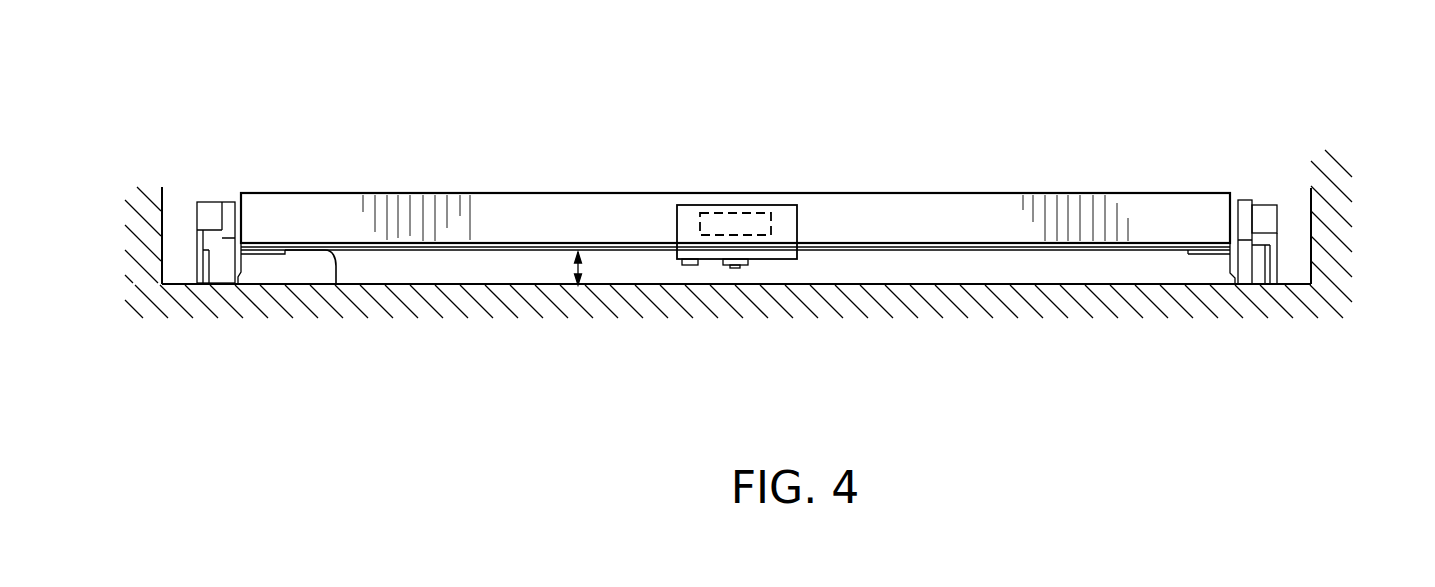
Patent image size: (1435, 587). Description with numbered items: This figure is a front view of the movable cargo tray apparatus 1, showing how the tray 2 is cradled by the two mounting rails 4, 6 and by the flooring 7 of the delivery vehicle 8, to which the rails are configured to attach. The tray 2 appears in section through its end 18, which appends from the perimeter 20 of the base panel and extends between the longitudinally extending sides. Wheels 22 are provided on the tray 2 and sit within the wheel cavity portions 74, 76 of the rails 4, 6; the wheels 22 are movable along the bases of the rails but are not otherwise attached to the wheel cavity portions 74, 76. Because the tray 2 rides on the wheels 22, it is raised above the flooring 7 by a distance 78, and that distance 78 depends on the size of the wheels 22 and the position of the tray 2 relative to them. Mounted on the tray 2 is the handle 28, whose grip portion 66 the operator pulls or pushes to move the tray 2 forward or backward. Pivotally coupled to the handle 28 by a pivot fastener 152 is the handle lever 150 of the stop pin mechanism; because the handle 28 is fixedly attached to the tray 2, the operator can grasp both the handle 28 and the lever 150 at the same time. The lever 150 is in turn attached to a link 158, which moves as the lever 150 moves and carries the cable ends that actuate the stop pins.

The movable cargo tray apparatus 1 is at (1102, 125).
The tray 2 is at (912, 185).
The mounting rail 4 is at (188, 222).
The mounting rail 6 is at (1278, 234).
The flooring 7 is at (880, 285).
The delivery vehicle 8 is at (1365, 257).
The end 18 is at (995, 218).
The perimeter 20 is at (988, 252).
The wheels 22 is at (222, 270).
The handle 28 is at (790, 198).
The grip portion 66 is at (688, 230).
The wheel cavity portion 74 is at (220, 243).
The wheel cavity portion 76 is at (1253, 248).
The distance 78 is at (580, 268).
The handle lever 150 is at (723, 223).
The pivot fastener 152 is at (693, 265).
The link 158 is at (740, 268).